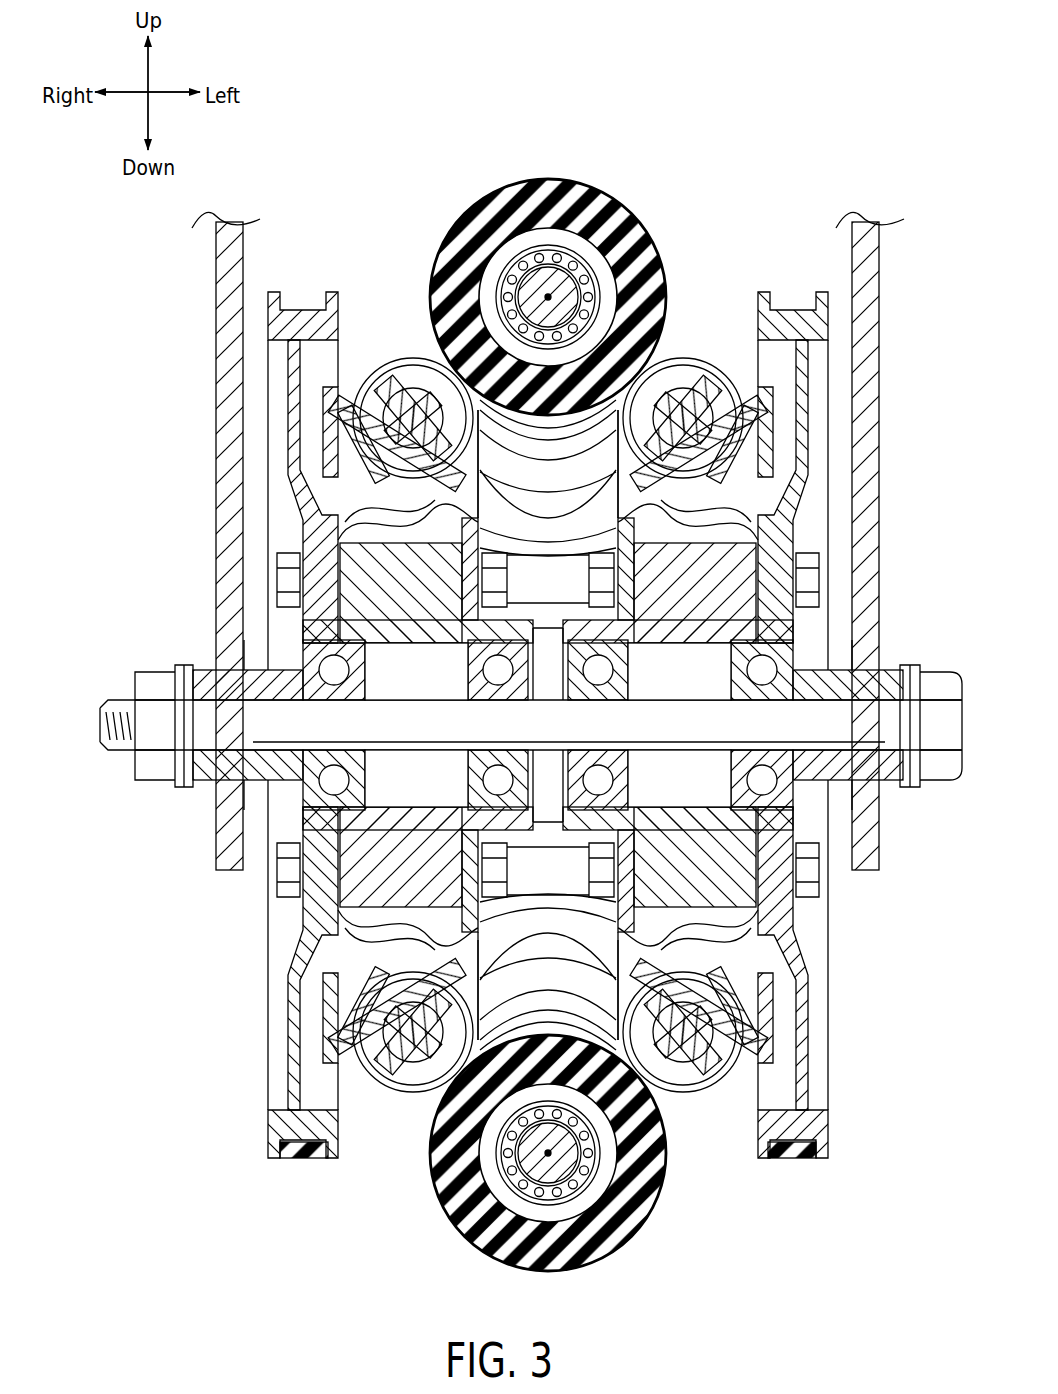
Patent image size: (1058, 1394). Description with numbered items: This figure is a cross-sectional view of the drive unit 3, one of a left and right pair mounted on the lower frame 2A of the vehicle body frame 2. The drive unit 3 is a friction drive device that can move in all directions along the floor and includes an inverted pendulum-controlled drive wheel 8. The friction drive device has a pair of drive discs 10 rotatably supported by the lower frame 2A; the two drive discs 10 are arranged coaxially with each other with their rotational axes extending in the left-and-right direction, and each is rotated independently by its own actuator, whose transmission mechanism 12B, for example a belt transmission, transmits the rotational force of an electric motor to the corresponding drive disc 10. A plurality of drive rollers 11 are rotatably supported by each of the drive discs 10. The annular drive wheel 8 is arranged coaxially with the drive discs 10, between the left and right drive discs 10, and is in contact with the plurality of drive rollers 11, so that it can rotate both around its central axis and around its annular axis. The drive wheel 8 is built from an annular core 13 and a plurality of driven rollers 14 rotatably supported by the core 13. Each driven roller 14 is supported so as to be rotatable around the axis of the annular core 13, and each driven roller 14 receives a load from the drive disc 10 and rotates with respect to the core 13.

The vehicle body frame 2 is at (539, 541).
The lower frame 2A is at (226, 350).
The drive unit 3 is at (531, 688).
The drive wheel 8 is at (572, 172).
The drive disc 10 is at (358, 362).
The drive roller 11 is at (676, 380).
The transmission mechanism 12B is at (265, 1170).
The annular core 13 is at (550, 293).
The driven roller 14 is at (456, 248).